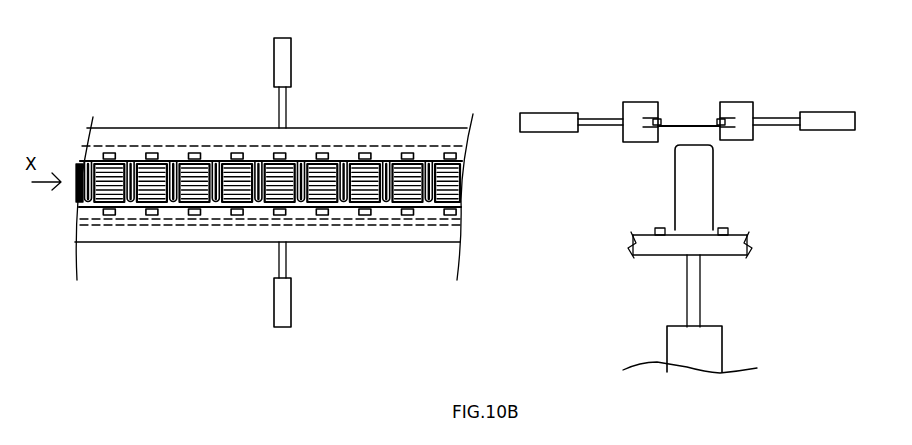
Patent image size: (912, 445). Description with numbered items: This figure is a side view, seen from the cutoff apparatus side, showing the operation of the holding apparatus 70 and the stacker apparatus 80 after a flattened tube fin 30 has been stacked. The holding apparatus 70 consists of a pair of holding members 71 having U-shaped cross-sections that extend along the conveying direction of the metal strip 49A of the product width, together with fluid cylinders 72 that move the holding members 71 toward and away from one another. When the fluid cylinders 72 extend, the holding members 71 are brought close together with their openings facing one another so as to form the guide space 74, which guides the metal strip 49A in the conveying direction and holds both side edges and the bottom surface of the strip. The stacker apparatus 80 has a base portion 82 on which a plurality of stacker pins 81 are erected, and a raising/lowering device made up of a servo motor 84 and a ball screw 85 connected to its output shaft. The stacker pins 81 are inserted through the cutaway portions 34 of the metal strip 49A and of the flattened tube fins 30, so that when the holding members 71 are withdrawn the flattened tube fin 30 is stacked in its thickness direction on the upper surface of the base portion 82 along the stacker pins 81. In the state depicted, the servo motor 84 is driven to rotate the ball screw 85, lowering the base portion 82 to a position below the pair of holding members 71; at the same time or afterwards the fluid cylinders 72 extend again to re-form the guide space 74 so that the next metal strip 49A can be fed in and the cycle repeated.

The flattened tube fin 30 is at (673, 230).
The cutaway portion 34 is at (129, 164).
The metal strip of the product width 49A is at (453, 188).
The holding apparatus 70 is at (803, 67).
The holding member 71 is at (347, 140).
The fluid cylinder 72 is at (283, 70).
The guide space 74 is at (687, 107).
The stacker apparatus 80 is at (829, 218).
The stacker pin 81 is at (88, 165).
The base portion 82 is at (392, 170).
The servo motor 84 is at (703, 342).
The ball screw 85 is at (693, 295).